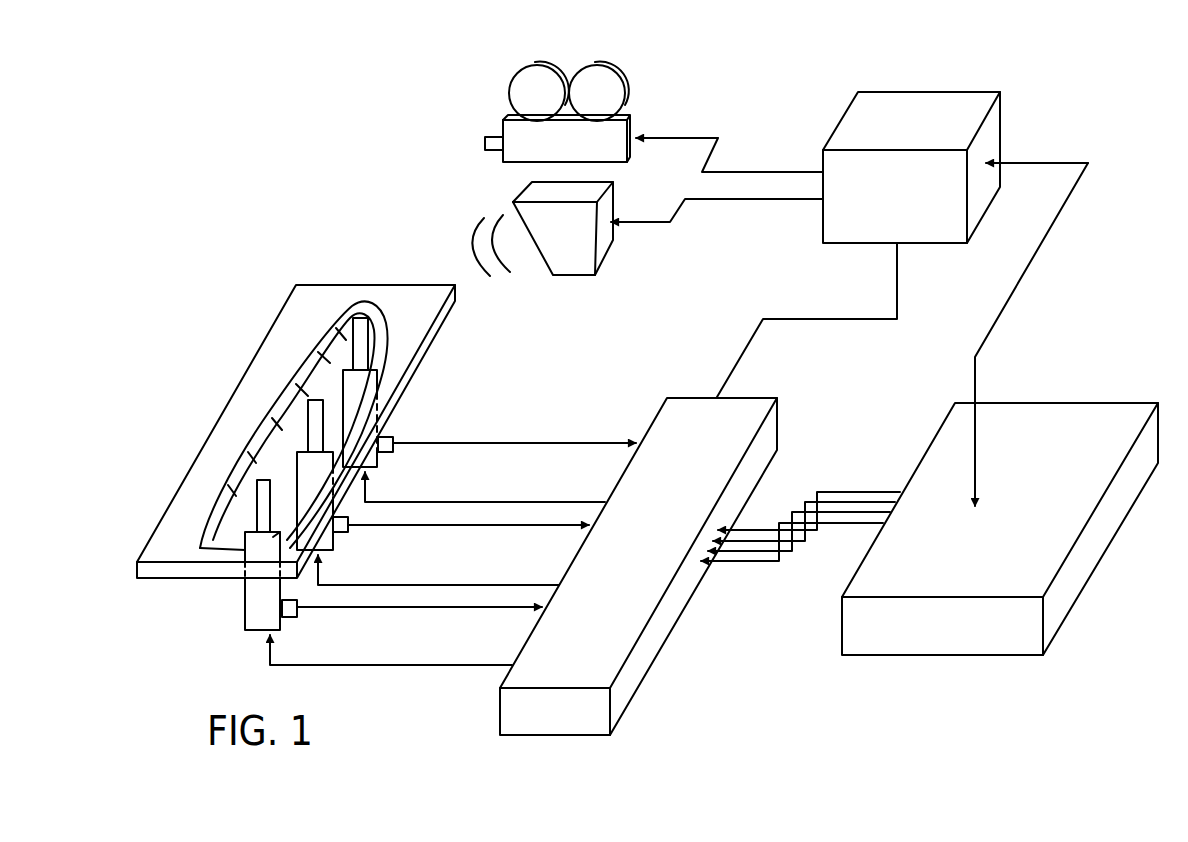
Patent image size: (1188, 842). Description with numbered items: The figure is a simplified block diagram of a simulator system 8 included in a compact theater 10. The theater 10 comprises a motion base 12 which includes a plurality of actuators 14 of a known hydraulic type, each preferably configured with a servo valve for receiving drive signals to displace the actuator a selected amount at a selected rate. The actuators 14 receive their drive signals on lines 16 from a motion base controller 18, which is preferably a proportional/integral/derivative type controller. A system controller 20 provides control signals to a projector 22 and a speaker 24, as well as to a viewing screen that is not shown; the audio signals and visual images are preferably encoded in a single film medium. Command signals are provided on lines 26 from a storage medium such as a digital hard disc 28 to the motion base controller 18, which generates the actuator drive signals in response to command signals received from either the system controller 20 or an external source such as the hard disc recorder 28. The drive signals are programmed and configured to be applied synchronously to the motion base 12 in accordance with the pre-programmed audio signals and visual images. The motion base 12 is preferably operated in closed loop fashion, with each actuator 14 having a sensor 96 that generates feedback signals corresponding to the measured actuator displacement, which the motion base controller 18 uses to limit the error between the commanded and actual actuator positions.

The simulator system 8 is at (350, 180).
The compact theater 10 is at (790, 682).
The motion base 12 is at (270, 370).
The actuators 14 is at (352, 412).
The lines 16 is at (520, 497).
The motion base controller 18 is at (597, 677).
The system controller 20 is at (940, 108).
The projector 22 is at (612, 93).
The speaker 24 is at (573, 260).
The lines 26 is at (863, 488).
The digital hard disc 28 is at (1063, 420).
The sensor 96 is at (388, 452).